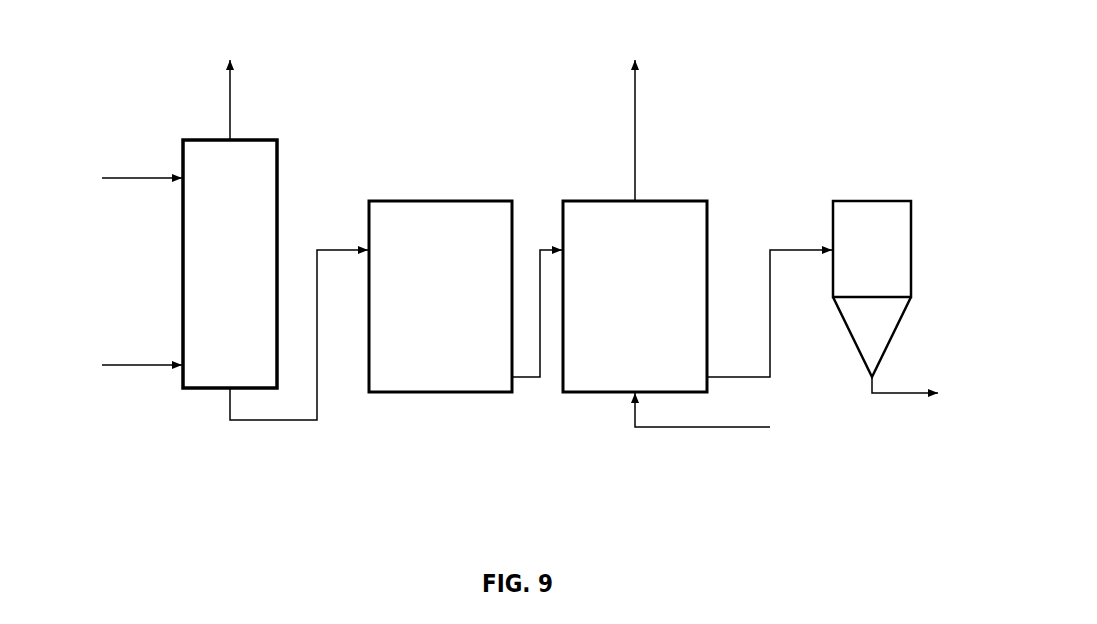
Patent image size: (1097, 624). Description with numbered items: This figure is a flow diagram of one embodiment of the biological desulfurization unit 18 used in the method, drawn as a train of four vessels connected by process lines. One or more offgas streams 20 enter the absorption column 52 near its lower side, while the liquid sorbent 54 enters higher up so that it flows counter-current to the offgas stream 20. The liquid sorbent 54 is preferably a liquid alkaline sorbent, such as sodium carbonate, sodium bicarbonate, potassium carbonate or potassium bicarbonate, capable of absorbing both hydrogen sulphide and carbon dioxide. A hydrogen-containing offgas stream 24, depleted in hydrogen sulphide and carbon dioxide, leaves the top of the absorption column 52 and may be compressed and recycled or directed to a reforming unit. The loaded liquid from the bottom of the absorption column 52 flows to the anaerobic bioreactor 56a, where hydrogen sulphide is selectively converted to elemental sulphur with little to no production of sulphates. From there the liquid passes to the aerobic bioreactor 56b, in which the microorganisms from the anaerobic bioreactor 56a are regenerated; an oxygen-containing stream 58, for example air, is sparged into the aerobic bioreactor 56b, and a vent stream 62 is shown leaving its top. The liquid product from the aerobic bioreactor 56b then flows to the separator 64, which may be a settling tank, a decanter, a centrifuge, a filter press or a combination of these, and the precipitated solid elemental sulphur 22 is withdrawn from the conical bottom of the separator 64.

The biological desulfurization unit 18 is at (907, 64).
The offgas stream 20 is at (132, 364).
The precipitated solid elemental sulphur 22 is at (905, 393).
The hydrogen-containing offgas stream 24 is at (230, 97).
The absorption column 52 is at (258, 140).
The liquid sorbent 54 is at (130, 177).
The anaerobic bioreactor 56a is at (463, 200).
The aerobic bioreactor 56b is at (657, 200).
The oxygen-containing stream 58 is at (707, 427).
The vent stream 62 is at (635, 97).
The separator 64 is at (890, 200).